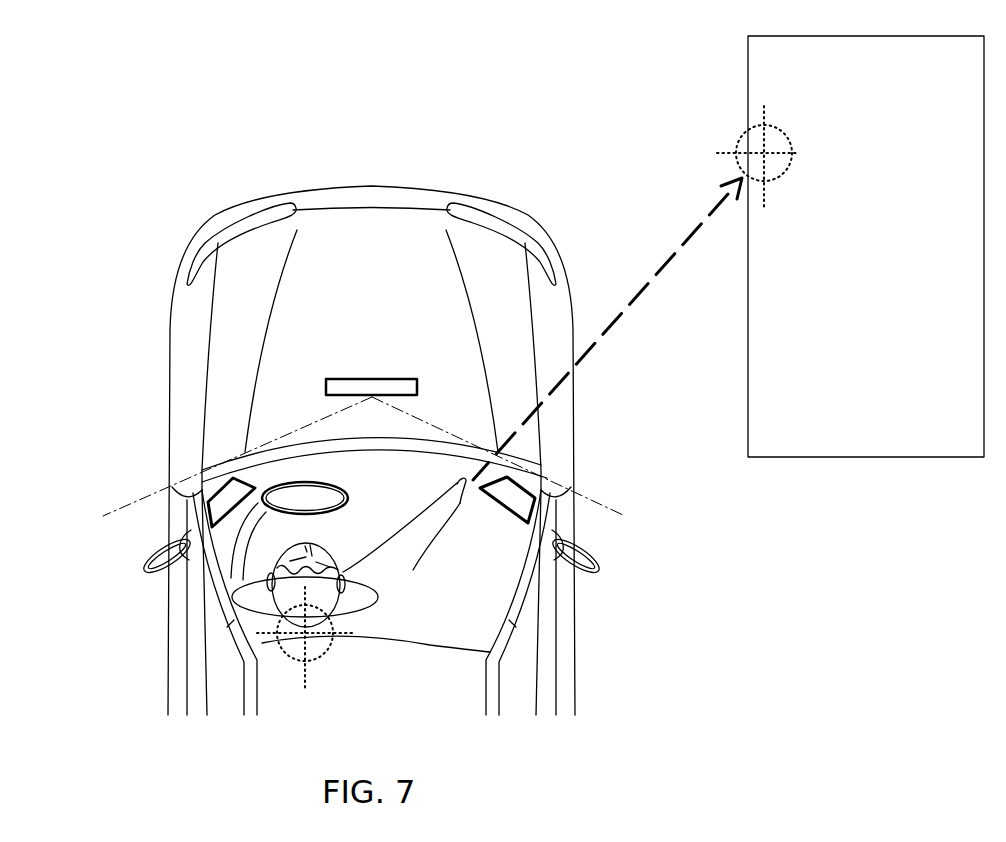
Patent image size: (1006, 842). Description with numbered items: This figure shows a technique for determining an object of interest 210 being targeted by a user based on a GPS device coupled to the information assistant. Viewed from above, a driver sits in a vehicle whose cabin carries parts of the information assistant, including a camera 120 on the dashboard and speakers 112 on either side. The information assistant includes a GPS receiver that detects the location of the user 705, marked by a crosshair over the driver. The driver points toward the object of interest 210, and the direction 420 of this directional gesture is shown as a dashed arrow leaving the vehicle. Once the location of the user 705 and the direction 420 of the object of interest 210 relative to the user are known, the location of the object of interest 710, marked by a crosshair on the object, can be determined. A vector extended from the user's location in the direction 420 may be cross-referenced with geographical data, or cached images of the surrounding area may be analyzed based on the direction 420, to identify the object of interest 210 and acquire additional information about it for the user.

The camera 120 is at (373, 379).
The speaker 112 is at (528, 479).
The direction 420 is at (663, 263).
The object of interest 210 is at (746, 98).
The location of the object of interest 710 is at (796, 155).
The location of the user 705 is at (262, 643).